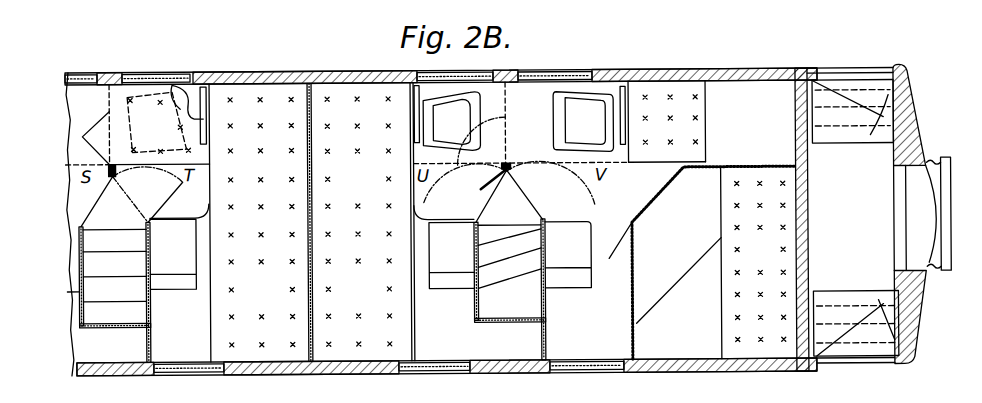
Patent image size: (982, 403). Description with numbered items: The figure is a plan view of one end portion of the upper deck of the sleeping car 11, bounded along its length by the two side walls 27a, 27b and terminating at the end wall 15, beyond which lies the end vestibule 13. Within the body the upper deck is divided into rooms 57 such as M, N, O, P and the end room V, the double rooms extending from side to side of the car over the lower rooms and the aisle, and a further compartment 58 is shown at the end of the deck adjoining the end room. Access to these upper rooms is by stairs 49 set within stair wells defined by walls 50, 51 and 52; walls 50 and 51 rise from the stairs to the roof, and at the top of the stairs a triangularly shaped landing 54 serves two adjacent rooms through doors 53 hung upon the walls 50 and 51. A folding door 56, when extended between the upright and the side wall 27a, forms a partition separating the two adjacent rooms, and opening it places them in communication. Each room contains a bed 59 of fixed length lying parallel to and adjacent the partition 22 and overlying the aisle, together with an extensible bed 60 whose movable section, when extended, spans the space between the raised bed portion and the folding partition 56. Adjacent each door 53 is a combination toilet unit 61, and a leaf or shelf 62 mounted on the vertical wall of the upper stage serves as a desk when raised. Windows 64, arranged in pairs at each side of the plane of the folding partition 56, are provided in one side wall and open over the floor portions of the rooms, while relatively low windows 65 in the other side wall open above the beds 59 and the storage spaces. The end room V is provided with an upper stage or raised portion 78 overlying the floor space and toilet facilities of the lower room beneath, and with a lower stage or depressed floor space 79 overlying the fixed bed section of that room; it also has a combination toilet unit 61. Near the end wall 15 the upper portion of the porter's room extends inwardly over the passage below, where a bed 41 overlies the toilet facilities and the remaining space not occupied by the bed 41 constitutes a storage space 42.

The car 11 is at (270, 68).
The end vestibule 13 is at (879, 214).
The end wall 15 is at (807, 180).
The partition 22 is at (313, 201).
The side wall of the car 27a is at (345, 72).
The side wall of the car 27b is at (266, 376).
The bed 41 is at (760, 261).
The storage space 42 is at (703, 262).
The stairs 49 is at (130, 256).
The stair well wall 50 is at (78, 260).
The stair well wall 51 is at (156, 303).
The stair well wall 52 is at (110, 327).
The door 53 is at (95, 200).
The landing 54 is at (312, 198).
The folding door 56 is at (82, 137).
The upper room 57 is at (77, 107).
The lavatory compartment 58 is at (190, 76).
The bed of fixed length 59 is at (310, 262).
The extensible bed 60 is at (309, 125).
The combination toilet unit 61 is at (190, 228).
The leaf or shelf 62 is at (208, 106).
The window 64 is at (130, 75).
The low window 65 is at (196, 375).
The upper stage or raised portion 78 is at (758, 82).
The lower stage or depressed floor space 79 is at (541, 84).